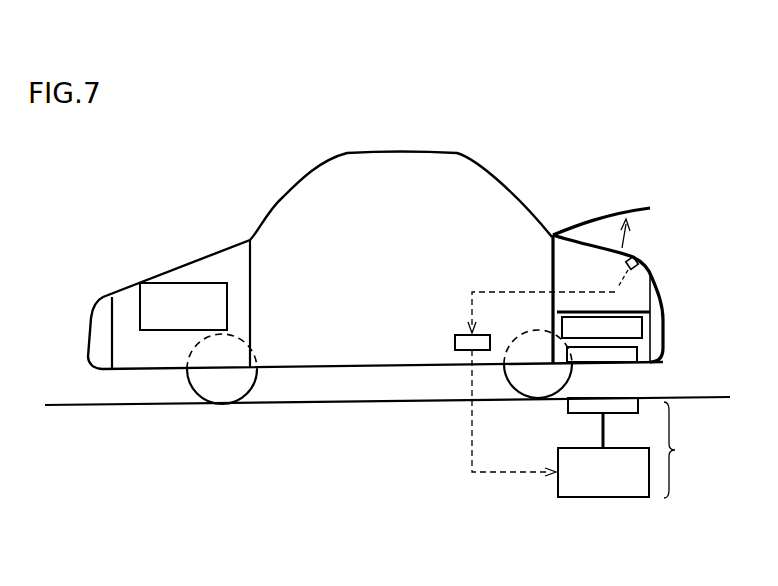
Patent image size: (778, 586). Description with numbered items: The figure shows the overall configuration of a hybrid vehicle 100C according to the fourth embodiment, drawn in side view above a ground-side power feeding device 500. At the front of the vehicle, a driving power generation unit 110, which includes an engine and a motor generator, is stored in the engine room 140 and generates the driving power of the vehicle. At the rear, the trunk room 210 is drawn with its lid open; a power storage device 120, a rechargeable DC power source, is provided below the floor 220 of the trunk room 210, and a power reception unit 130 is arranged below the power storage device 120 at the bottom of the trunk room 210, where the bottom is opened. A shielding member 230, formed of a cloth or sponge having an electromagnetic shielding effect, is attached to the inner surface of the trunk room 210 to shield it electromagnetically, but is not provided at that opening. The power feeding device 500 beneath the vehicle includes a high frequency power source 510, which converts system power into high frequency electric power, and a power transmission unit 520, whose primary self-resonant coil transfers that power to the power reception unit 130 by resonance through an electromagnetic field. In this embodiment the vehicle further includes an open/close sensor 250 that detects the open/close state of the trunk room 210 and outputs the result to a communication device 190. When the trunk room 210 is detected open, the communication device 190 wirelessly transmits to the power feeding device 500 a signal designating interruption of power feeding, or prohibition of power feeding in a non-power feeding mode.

The hybrid vehicle 100C is at (400, 152).
The driving power generation unit 110 is at (182, 283).
The power storage device 120 is at (642, 327).
The power reception unit 130 is at (637, 352).
The engine room 140 is at (127, 320).
The communication device 190 is at (463, 351).
The trunk room 210 is at (637, 283).
The floor 220 is at (630, 307).
The shielding member 230 is at (553, 275).
The open/close sensor 250 is at (638, 258).
The power feeding device 500 is at (692, 450).
The high frequency power source 510 is at (603, 497).
The power transmission unit 520 is at (567, 402).